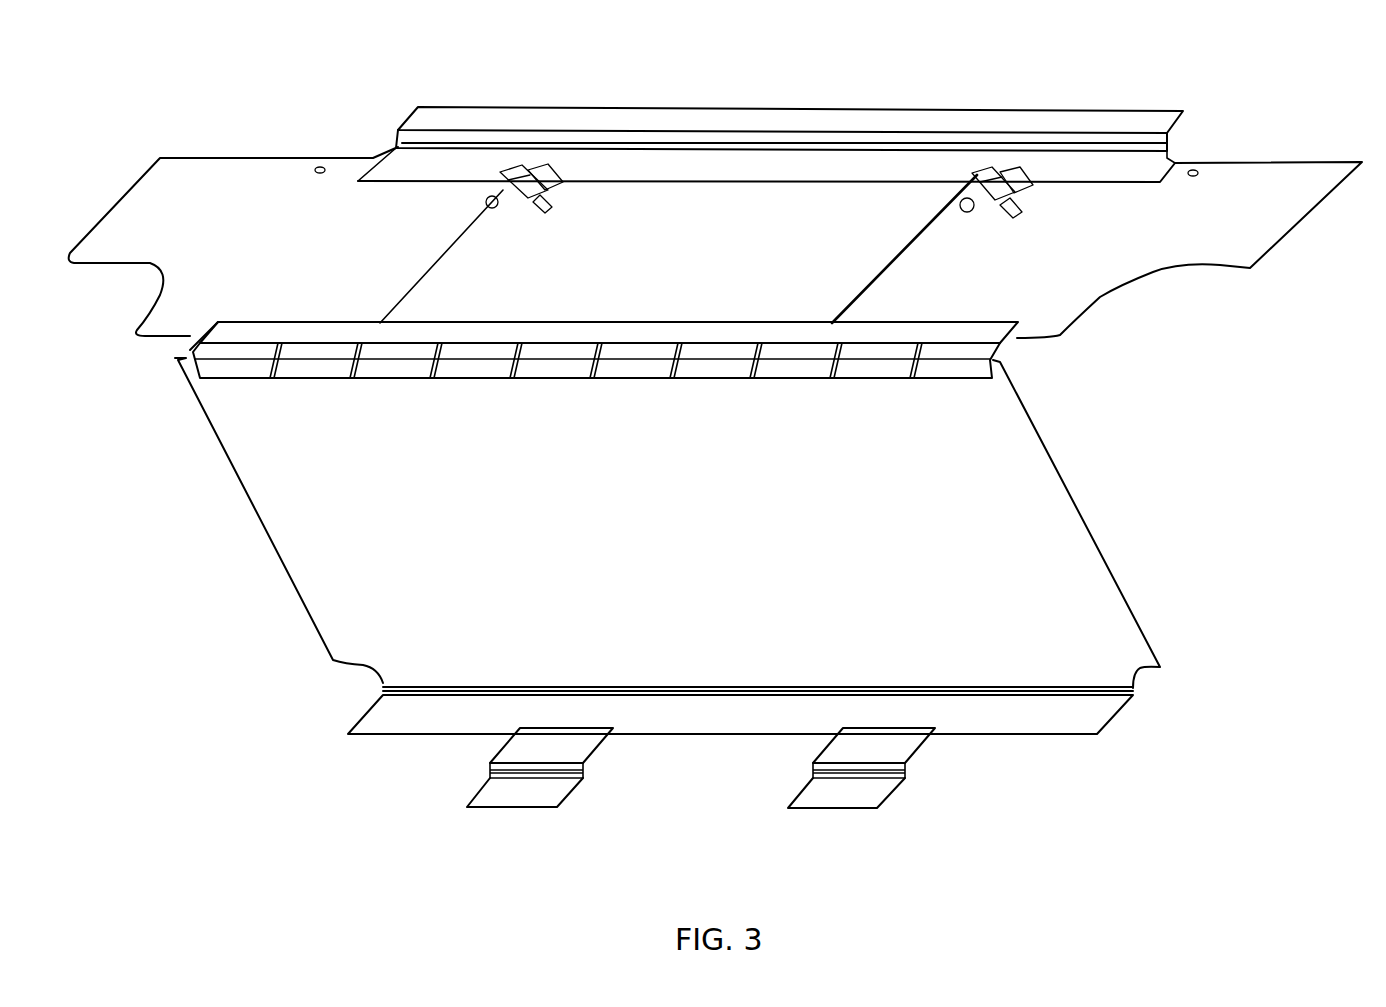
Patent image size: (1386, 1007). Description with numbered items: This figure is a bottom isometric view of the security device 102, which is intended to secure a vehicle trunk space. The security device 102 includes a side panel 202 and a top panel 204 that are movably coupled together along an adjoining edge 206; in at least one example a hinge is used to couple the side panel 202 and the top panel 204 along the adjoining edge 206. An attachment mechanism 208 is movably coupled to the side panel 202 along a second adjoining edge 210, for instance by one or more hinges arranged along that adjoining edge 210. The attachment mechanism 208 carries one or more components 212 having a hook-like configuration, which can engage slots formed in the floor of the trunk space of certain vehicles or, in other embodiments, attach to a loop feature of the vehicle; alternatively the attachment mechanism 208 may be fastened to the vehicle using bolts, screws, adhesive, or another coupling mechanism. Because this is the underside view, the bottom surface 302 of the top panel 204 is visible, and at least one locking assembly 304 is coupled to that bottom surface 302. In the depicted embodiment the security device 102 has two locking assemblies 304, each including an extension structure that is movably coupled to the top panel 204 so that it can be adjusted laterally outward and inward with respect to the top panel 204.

The security device 102 is at (228, 72).
The side panel 202 is at (262, 525).
The top panel 204 is at (460, 107).
The adjoining edge 206 is at (797, 358).
The attachment mechanism 208 is at (1100, 725).
The adjoining edge 210 is at (1000, 692).
The hook-like components 212 is at (578, 785).
The bottom surface 302 is at (733, 202).
The locking assembly 304 is at (518, 232).